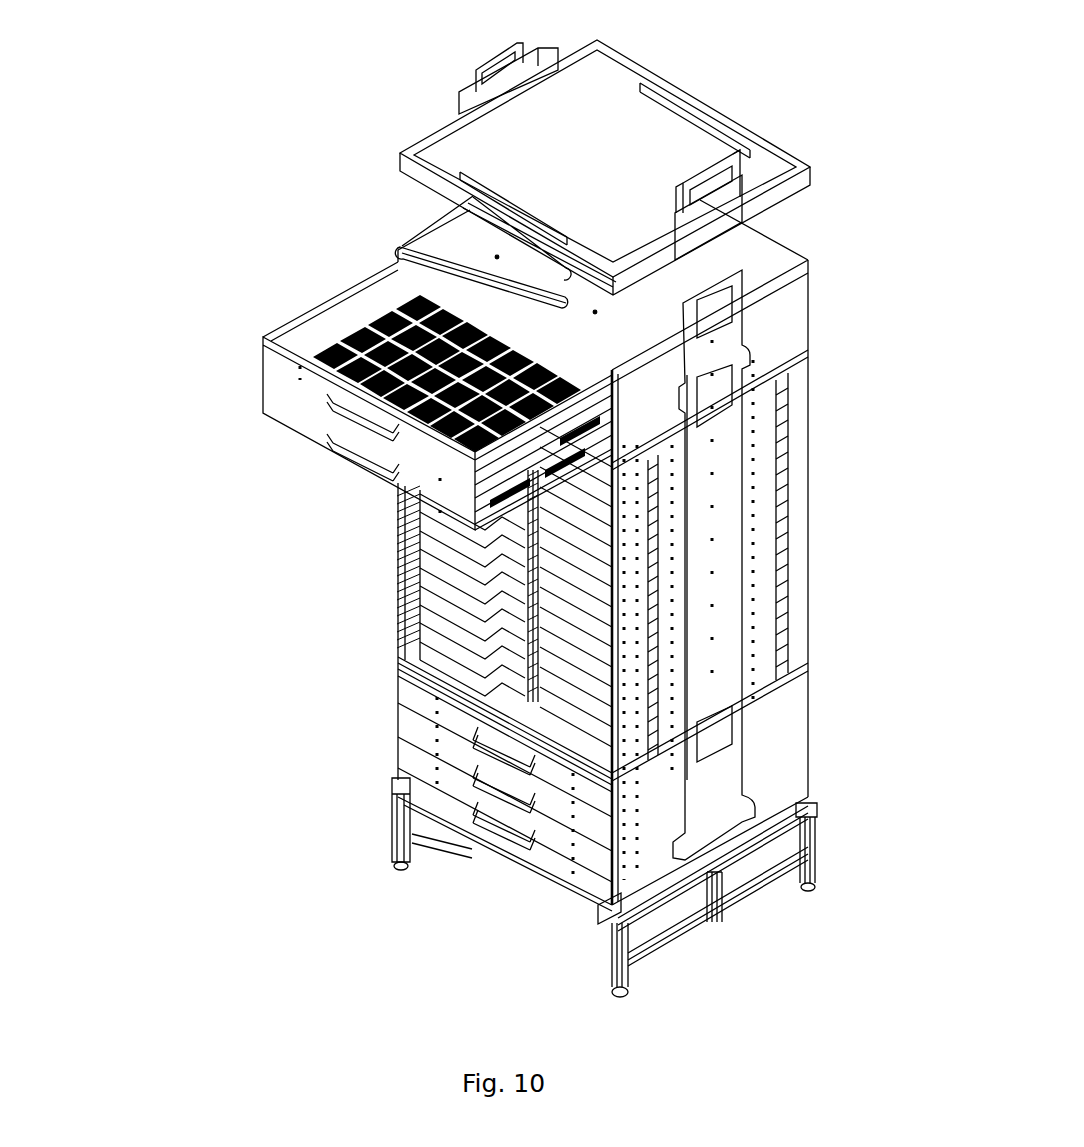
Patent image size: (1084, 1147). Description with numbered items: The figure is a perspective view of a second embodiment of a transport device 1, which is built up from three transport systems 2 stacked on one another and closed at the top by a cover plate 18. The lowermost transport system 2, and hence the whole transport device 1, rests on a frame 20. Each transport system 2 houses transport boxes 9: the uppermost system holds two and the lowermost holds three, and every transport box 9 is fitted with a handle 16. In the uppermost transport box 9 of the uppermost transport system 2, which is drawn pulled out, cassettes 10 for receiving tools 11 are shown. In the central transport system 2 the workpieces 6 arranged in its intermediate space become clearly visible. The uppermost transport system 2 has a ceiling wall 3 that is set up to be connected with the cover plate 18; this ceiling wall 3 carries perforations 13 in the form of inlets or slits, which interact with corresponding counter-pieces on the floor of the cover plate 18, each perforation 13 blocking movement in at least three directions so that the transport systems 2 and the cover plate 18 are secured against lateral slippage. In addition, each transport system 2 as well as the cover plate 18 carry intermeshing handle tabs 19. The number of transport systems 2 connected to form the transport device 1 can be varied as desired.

The transport device 1 is at (160, 156).
The transport system 2 is at (796, 306).
The ceiling wall 3 is at (463, 235).
The workpieces 6 is at (478, 657).
The transport box 9 is at (425, 730).
The cassette 10 is at (342, 386).
The tools 11 is at (298, 334).
The perforation 13 is at (528, 290).
The handle 16 is at (340, 415).
The cover plate 18 is at (577, 100).
The handle tabs 19 is at (745, 188).
The frame 20 is at (395, 820).